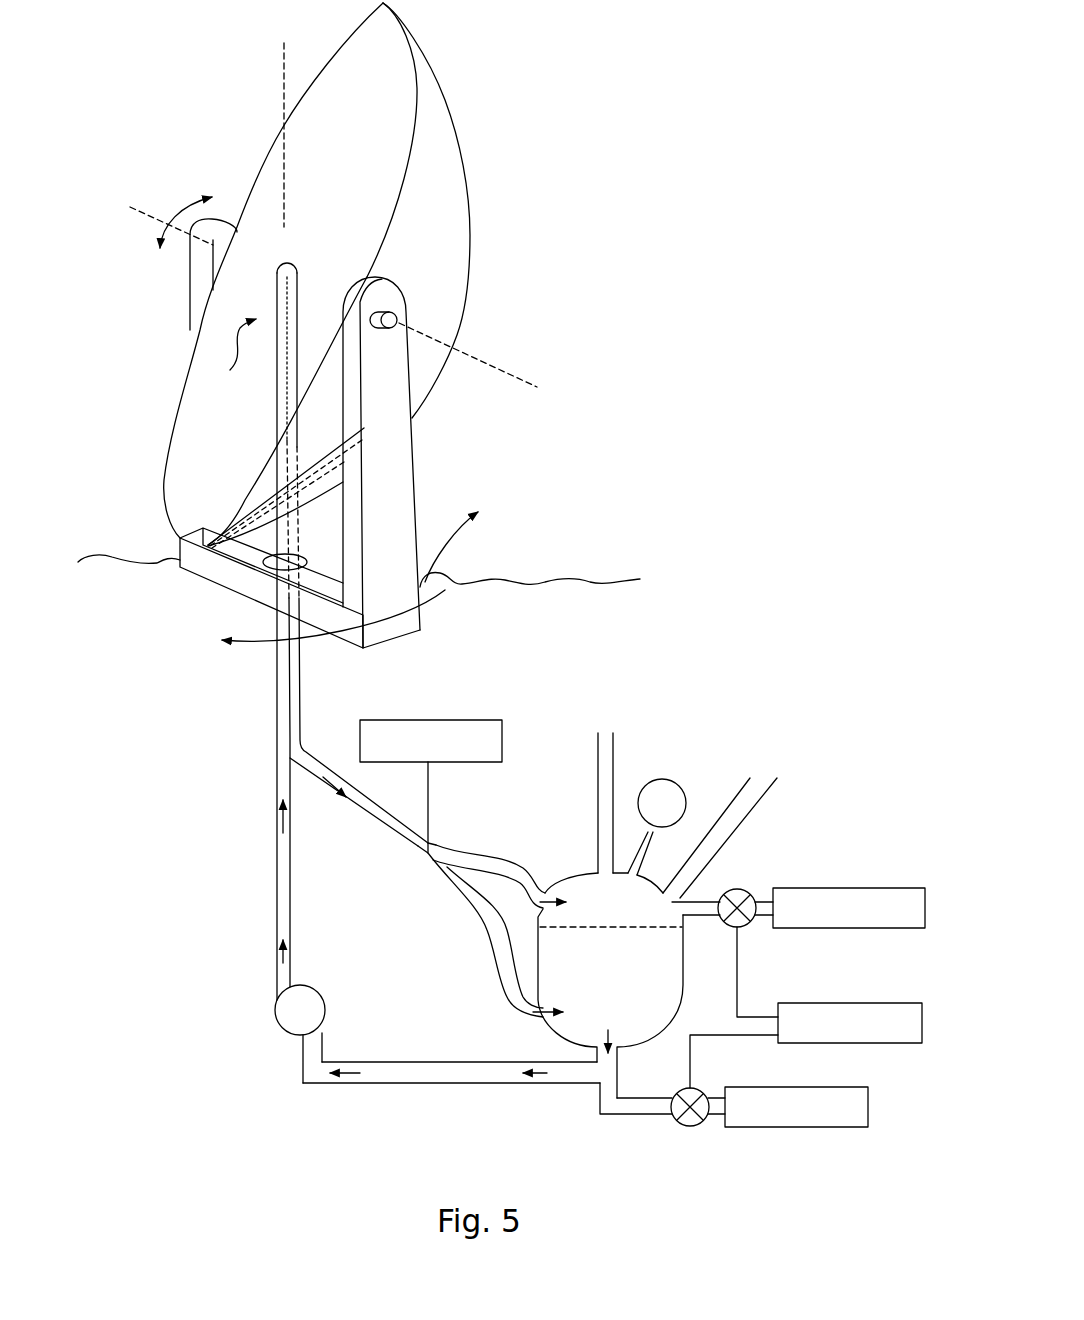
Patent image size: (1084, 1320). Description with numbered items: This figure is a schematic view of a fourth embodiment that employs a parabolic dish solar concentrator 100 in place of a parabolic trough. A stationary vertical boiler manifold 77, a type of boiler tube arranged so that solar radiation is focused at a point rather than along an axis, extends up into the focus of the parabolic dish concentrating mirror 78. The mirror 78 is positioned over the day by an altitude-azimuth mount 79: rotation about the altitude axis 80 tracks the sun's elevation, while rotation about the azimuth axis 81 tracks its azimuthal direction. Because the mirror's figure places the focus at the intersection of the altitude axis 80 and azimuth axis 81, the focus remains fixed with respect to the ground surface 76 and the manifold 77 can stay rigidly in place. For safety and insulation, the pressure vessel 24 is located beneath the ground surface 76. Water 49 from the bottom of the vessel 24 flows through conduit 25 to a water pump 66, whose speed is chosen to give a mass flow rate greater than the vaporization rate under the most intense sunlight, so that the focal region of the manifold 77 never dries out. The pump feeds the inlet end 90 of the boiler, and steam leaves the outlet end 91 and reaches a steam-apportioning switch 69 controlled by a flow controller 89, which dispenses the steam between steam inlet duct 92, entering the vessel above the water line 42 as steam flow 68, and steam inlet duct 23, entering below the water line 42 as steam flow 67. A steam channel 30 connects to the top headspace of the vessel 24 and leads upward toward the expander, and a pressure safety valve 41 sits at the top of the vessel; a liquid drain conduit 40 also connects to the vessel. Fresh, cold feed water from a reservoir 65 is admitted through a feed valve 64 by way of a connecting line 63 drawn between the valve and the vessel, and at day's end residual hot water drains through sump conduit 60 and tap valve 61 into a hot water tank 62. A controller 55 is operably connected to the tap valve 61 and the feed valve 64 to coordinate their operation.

The parabolic dish solar concentrator 100 is at (514, 133).
The parabolic dish concentrating mirror 78 is at (443, 212).
The azimuth axis 81 is at (282, 83).
The altitude axis 80 is at (490, 356).
The altitude-azimuth mount 79 is at (388, 483).
The vertical boiler manifold 77 is at (208, 297).
The ground surface 76 is at (555, 578).
The inlet end 90 is at (276, 870).
The outlet end 91 is at (320, 762).
The steam-apportioning switch 69 is at (433, 862).
The flow controller 89 is at (484, 720).
The steam inlet duct 92 is at (512, 860).
The steam flow 68 is at (548, 892).
The steam inlet duct 23 is at (523, 1013).
The steam flow 67 is at (548, 1006).
The pressure vessel 24 is at (653, 992).
The water line 42 is at (603, 928).
The steam channel 30 is at (597, 778).
The pressure safety valve 41 is at (649, 779).
The liquid drain conduit 40 is at (742, 814).
The cold water conduit 63 is at (700, 902).
The feed valve 64 is at (740, 928).
The reservoir 65 is at (828, 929).
The controller 55 is at (905, 1043).
The tap valve 61 is at (690, 1127).
The hot water tank 62 is at (777, 1128).
The sump conduit 60 is at (628, 1108).
The conduit 25 is at (462, 1083).
The water 49 is at (346, 1083).
The water pump 66 is at (313, 1003).